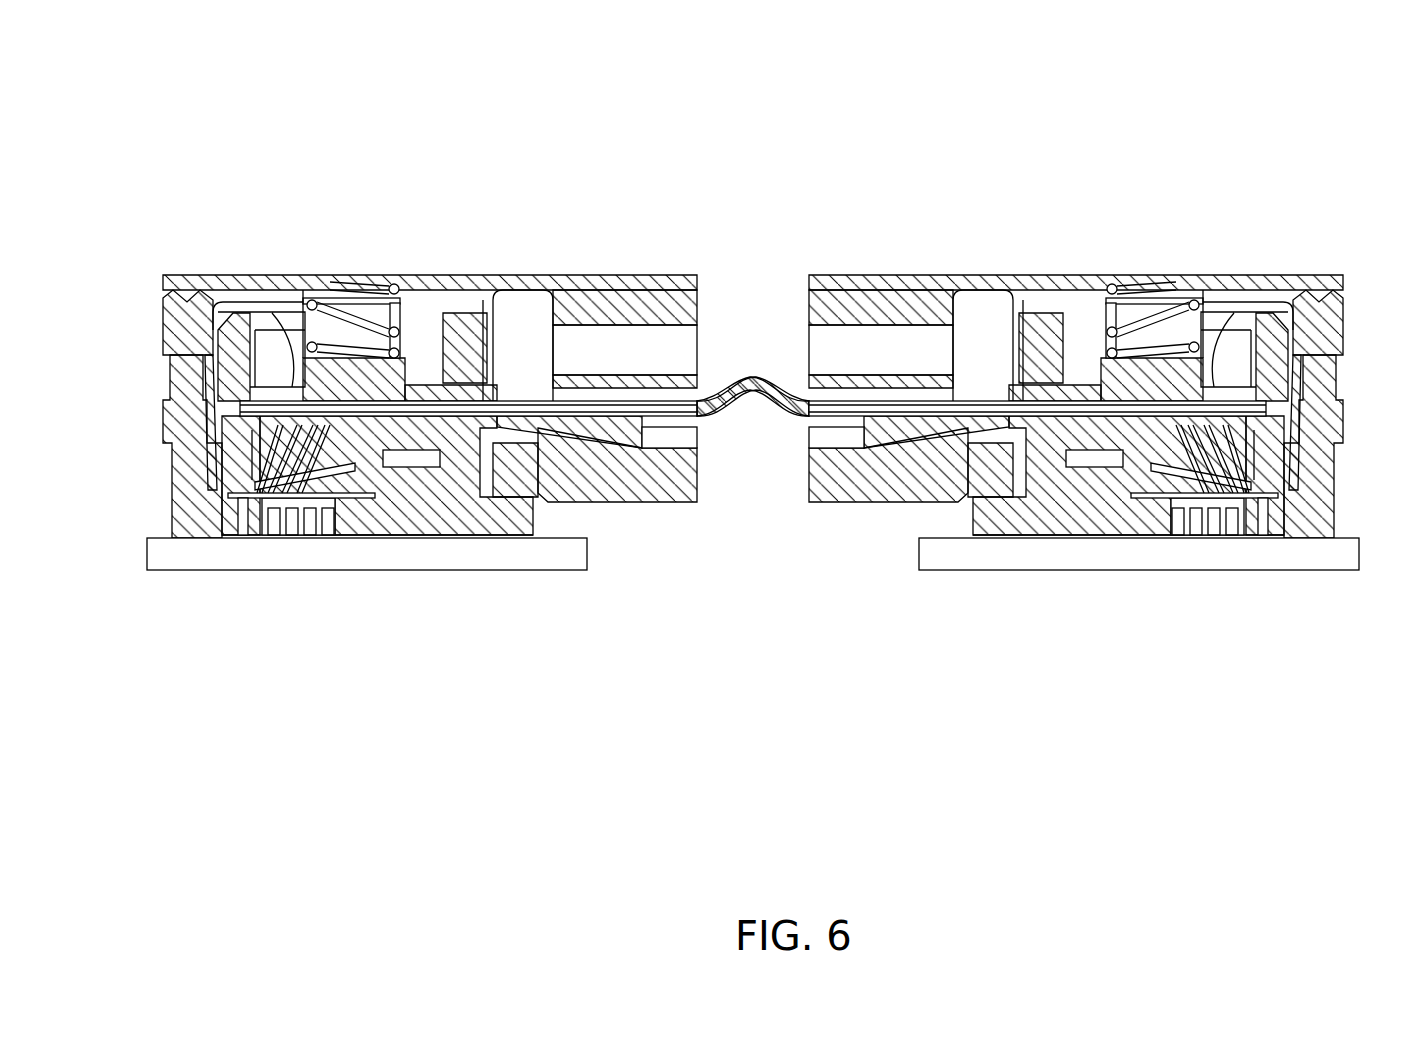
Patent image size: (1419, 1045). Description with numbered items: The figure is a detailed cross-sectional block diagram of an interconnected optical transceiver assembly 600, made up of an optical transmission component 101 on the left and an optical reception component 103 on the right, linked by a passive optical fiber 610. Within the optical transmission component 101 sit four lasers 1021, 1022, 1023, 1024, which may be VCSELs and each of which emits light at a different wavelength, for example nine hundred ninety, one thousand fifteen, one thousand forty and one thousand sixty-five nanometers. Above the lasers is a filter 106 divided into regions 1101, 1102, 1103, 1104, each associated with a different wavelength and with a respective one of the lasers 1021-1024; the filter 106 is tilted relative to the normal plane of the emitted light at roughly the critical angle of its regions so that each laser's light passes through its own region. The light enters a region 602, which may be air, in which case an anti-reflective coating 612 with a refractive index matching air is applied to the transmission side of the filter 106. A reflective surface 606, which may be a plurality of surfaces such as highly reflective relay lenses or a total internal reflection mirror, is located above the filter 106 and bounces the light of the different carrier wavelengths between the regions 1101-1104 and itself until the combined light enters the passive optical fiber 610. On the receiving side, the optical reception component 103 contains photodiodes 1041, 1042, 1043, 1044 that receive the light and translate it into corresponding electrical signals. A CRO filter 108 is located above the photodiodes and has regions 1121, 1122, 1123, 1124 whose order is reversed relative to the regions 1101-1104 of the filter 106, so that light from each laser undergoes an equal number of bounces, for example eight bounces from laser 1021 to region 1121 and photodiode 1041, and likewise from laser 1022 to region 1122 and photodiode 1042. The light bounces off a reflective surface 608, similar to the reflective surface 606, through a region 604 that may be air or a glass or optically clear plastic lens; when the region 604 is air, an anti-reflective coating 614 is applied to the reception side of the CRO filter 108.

The interconnected optical transceiver assembly 600 is at (148, 56).
The optical transmission component 101 is at (230, 199).
The optical reception component 103 is at (880, 199).
The laser 1021 is at (266, 538).
The laser 1022 is at (291, 538).
The laser 1023 is at (309, 538).
The laser 1024 is at (329, 538).
The photodiode 1041 is at (1232, 538).
The photodiode 1042 is at (1214, 538).
The photodiode 1043 is at (1196, 538).
The photodiode 1044 is at (1178, 538).
The filter 106 is at (340, 472).
The CRO filter 108 is at (1060, 490).
The region 1101 is at (325, 478).
The region 1102 is at (335, 472).
The region 1103 is at (353, 497).
The region 1104 is at (330, 488).
The region 1121 is at (1176, 488).
The region 1122 is at (1153, 497).
The region 1123 is at (1171, 472).
The region 1124 is at (1181, 478).
The region 602 is at (205, 470).
The region 604 is at (1301, 470).
The reflective surface 606 is at (320, 488).
The reflective surface 608 is at (1186, 488).
The passive optical fiber 610 is at (457, 401).
The anti-reflective coating 612 is at (235, 490).
The anti-reflective coating 614 is at (1271, 490).